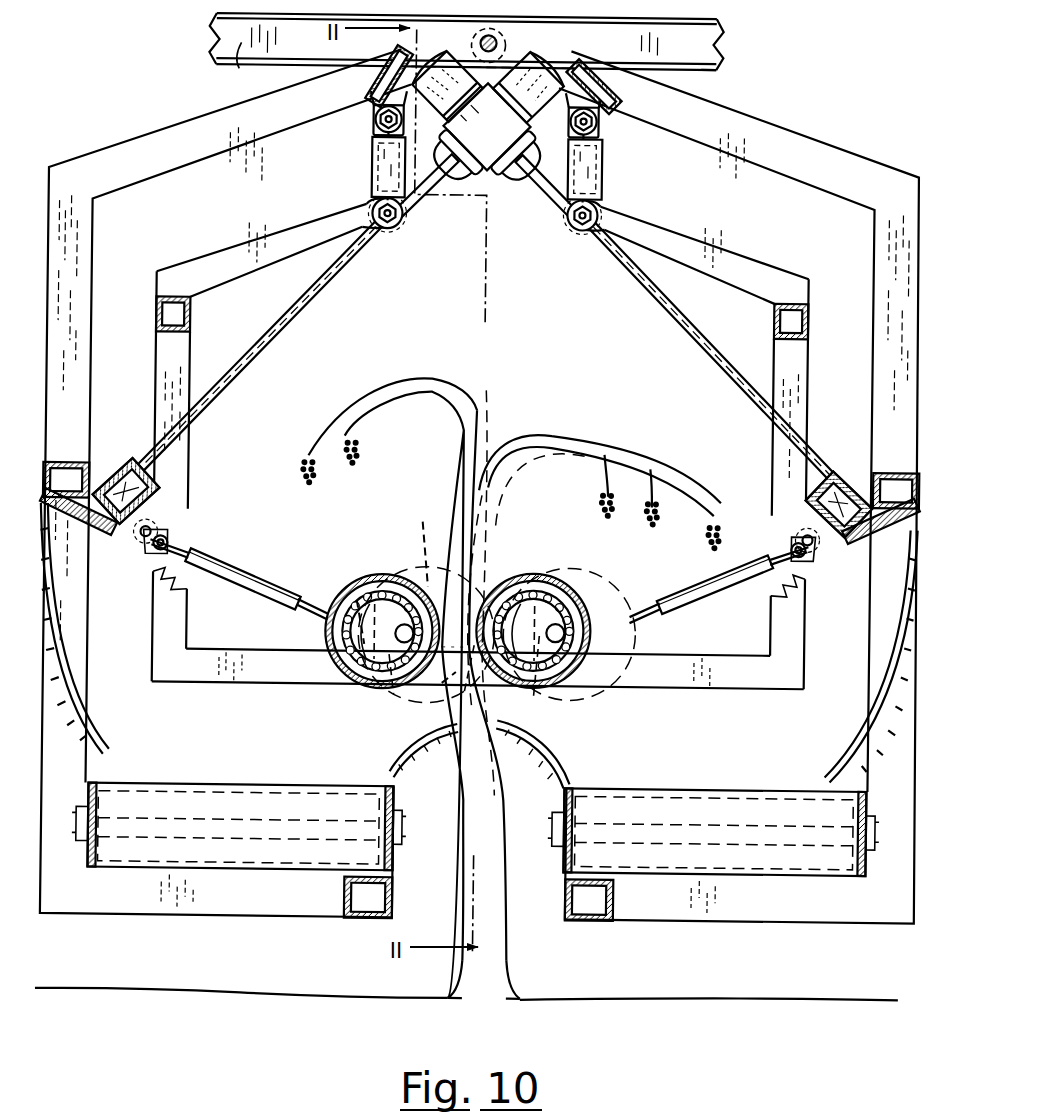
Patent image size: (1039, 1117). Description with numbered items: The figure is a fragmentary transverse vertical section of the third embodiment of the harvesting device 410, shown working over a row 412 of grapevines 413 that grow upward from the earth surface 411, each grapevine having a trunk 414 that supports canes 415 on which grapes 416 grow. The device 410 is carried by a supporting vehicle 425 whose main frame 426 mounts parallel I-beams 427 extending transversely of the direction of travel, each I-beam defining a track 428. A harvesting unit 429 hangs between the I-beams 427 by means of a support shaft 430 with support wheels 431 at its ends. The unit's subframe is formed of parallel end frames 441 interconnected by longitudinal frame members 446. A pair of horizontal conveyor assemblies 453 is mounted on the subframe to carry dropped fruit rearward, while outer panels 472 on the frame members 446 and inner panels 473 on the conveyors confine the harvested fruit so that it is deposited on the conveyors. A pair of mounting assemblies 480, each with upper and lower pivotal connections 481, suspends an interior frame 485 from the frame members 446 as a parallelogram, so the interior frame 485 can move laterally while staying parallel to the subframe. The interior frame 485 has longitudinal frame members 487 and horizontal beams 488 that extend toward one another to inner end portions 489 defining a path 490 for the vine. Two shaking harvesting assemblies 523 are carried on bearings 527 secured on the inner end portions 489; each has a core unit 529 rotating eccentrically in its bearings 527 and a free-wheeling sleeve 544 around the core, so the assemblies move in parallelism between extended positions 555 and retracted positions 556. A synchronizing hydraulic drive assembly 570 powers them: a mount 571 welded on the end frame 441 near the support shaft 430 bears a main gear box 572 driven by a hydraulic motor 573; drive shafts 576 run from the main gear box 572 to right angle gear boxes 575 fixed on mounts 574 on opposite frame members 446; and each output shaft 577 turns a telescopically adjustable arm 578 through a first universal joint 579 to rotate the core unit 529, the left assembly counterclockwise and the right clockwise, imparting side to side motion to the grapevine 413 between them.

The harvesting device 410 is at (814, 132).
The earth surface 411 is at (742, 997).
The row 412 is at (516, 940).
The grapevine 413 is at (474, 856).
The trunk 414 is at (472, 828).
The canes 415 is at (412, 383).
The grapes 416 is at (356, 464).
The carrying vehicle 425 is at (764, 50).
The main frame 426 is at (710, 76).
The I-beams 427 is at (684, 54).
The track 428 is at (245, 48).
The harvesting unit 429 is at (152, 128).
The support shaft 430 is at (497, 35).
The support wheels 431 is at (500, 55).
The end frames 441 is at (187, 150).
The longitudinal frame members 446 is at (375, 76).
The conveyor assemblies 453 is at (258, 784).
The outer panels 472 is at (72, 673).
The inner panels 473 is at (388, 772).
The mounting assemblies 480 is at (370, 160).
The pivotal connections 481 is at (372, 123).
The interior frame 485 is at (155, 378).
The longitudinal frame members 487 is at (191, 320).
The horizontal beams 488 is at (255, 683).
The inner end portions 489 is at (426, 692).
The path 490 is at (453, 738).
The harvesting assemblies 523 is at (480, 602).
The bearings 527 is at (386, 600).
The core unit 529 is at (355, 624).
The sleeve 544 is at (368, 592).
The extended positions 555 is at (538, 713).
The retracted positions 556 is at (388, 692).
The hydraulic drive assembly 570 is at (335, 366).
The mount 571 is at (525, 87).
The main gear box 572 is at (487, 160).
The hydraulic motor 573 is at (455, 70).
The mounts 574 is at (105, 540).
The right angle gear box 575 is at (155, 484).
The drive shafts 576 is at (305, 310).
The output shaft 577 is at (158, 524).
The adjustable arms 578 is at (236, 562).
The first universal joints 579 is at (176, 540).